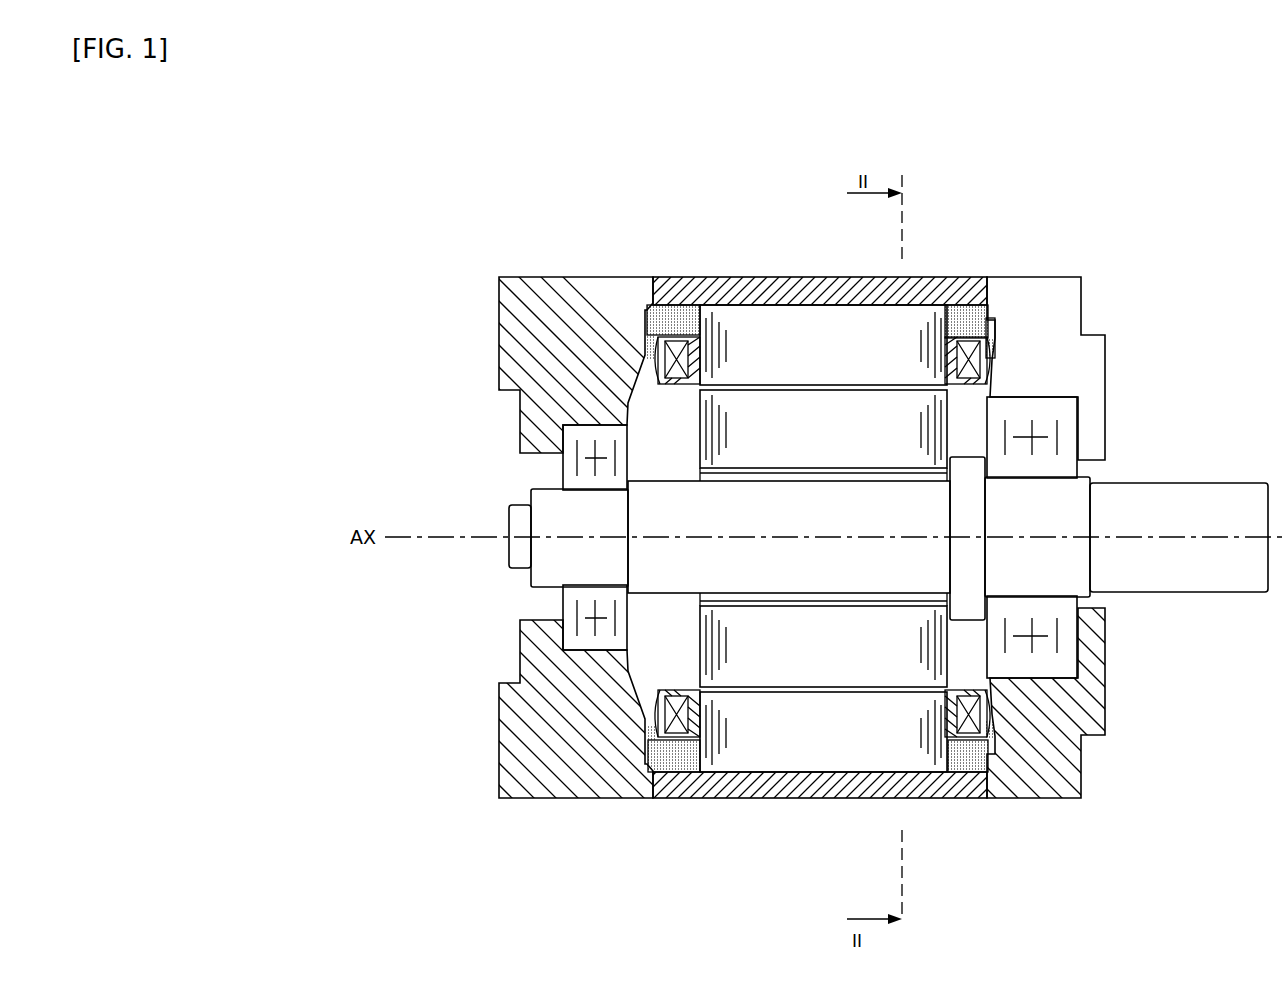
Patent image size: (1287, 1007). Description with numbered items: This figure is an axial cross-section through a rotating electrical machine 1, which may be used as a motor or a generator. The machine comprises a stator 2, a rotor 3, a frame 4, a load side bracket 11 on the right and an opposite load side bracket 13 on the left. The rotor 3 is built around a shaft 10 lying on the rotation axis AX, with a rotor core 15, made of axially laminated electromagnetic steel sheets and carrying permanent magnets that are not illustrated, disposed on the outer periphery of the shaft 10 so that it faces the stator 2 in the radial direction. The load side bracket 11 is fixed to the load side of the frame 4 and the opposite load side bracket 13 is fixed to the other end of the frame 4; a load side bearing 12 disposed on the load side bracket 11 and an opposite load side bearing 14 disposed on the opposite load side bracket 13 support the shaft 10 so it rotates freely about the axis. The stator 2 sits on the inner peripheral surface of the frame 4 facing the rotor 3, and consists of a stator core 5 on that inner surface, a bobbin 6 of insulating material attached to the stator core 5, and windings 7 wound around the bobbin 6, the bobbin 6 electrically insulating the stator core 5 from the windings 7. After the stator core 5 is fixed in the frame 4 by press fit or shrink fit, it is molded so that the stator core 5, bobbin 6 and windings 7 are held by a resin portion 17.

The rotating electrical machine 1 is at (1193, 252).
The stator 2 is at (783, 296).
The rotor 3 is at (773, 690).
The frame 4 is at (738, 292).
The stator core 5 is at (862, 342).
The bobbin 6 is at (962, 322).
The windings 7 is at (678, 352).
The shaft 10 is at (1172, 505).
The load side bracket 11 is at (1085, 360).
The load side bearing 12 is at (1070, 638).
The opposite load side bracket 13 is at (527, 370).
The opposite load side bearing 14 is at (570, 610).
The rotor core 15 is at (878, 670).
The resin portion 17 is at (985, 318).